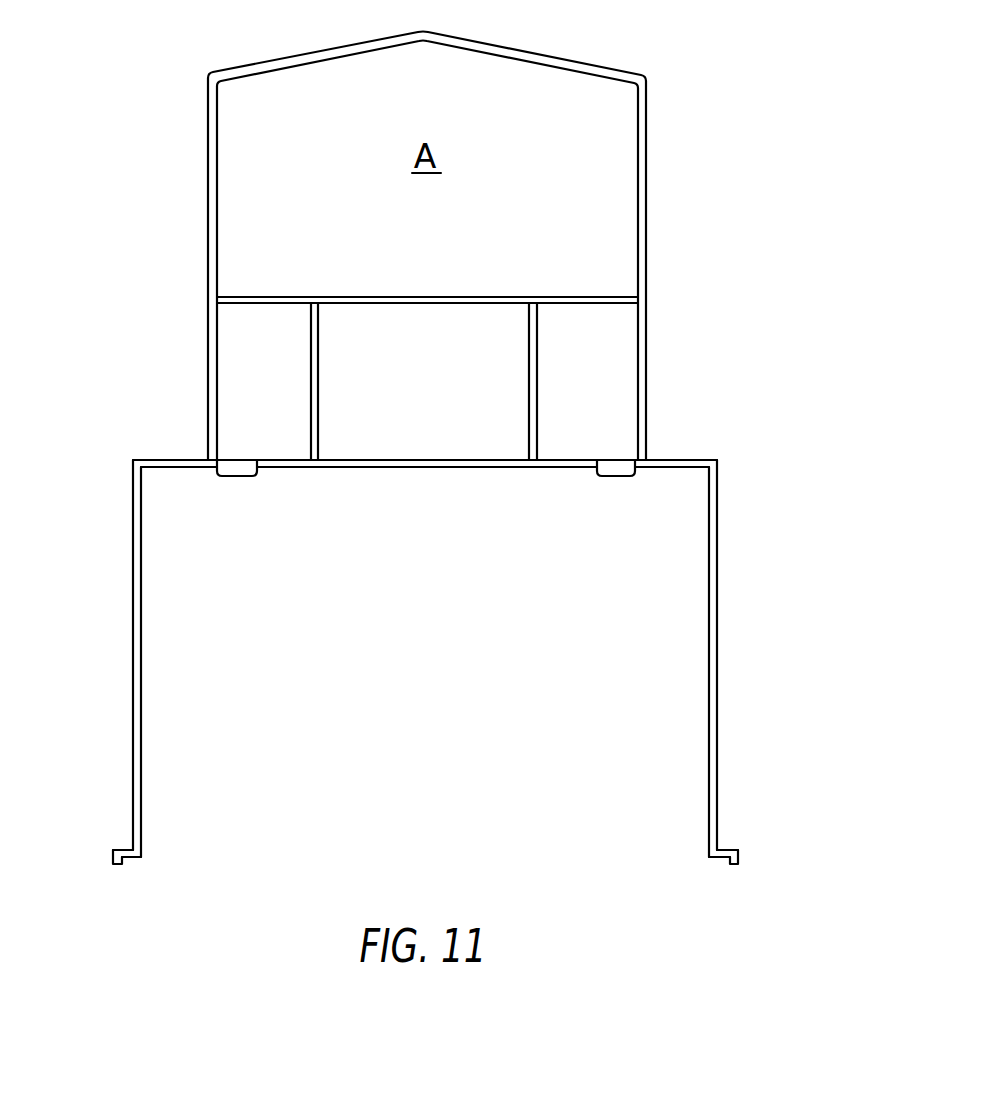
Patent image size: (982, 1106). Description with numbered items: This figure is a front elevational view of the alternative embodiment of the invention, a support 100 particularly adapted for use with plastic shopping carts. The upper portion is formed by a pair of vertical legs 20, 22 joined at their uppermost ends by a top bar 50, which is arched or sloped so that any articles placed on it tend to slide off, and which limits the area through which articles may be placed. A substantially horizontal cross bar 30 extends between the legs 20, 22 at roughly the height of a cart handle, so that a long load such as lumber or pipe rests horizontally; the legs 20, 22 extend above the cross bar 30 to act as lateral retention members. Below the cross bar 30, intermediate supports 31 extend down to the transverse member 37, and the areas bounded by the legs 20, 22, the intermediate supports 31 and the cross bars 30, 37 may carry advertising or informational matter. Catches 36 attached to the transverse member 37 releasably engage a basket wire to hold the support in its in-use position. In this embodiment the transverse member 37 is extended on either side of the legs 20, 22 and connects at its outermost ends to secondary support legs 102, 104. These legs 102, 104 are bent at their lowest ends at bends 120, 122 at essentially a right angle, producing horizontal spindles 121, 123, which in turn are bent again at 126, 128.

The vertical leg 20 is at (207, 218).
The vertical leg 22 is at (648, 215).
The top bar 50 is at (524, 54).
The cross bar 30 is at (428, 296).
The intermediate supports 31 is at (529, 383).
The catches 36 is at (238, 470).
The transverse member 37 is at (420, 463).
The support 100 is at (437, 610).
The secondary support leg 102 is at (132, 610).
The secondary support leg 104 is at (719, 611).
The bend 120 is at (141, 858).
The horizontal spindle 121 is at (126, 848).
The spindle bend 126 is at (113, 862).
The bend 122 is at (709, 858).
The horizontal spindle 123 is at (724, 848).
The spindle bend 128 is at (740, 862).